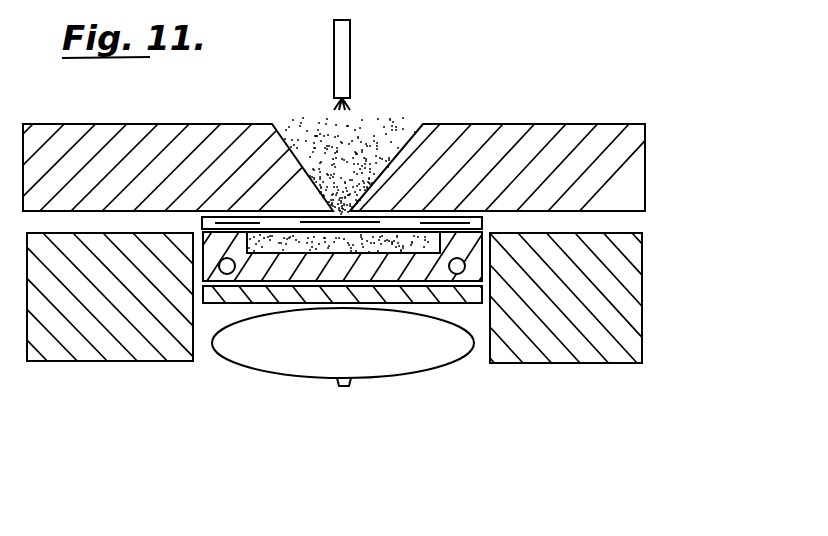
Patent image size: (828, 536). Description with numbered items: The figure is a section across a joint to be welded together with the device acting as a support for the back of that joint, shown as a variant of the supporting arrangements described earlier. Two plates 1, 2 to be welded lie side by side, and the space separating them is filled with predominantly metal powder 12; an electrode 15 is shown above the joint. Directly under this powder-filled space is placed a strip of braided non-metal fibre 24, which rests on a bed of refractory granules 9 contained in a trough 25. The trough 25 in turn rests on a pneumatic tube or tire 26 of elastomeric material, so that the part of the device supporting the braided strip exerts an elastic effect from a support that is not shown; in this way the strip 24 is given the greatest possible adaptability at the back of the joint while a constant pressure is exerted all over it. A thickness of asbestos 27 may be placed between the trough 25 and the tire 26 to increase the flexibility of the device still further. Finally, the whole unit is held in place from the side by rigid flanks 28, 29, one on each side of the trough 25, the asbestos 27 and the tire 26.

The plate 1 is at (165, 132).
The plate 2 is at (478, 135).
The refractory granules 9 is at (368, 238).
The metal powder 12 is at (313, 126).
The electrode 15 is at (342, 62).
The strip of braided non-metal fibre 24 is at (202, 221).
The trough 25 is at (256, 266).
The pneumatic tube or tire 26 is at (250, 354).
The thickness of asbestos 27 is at (440, 294).
The rigid flank 28 is at (90, 356).
The rigid flank 29 is at (542, 356).